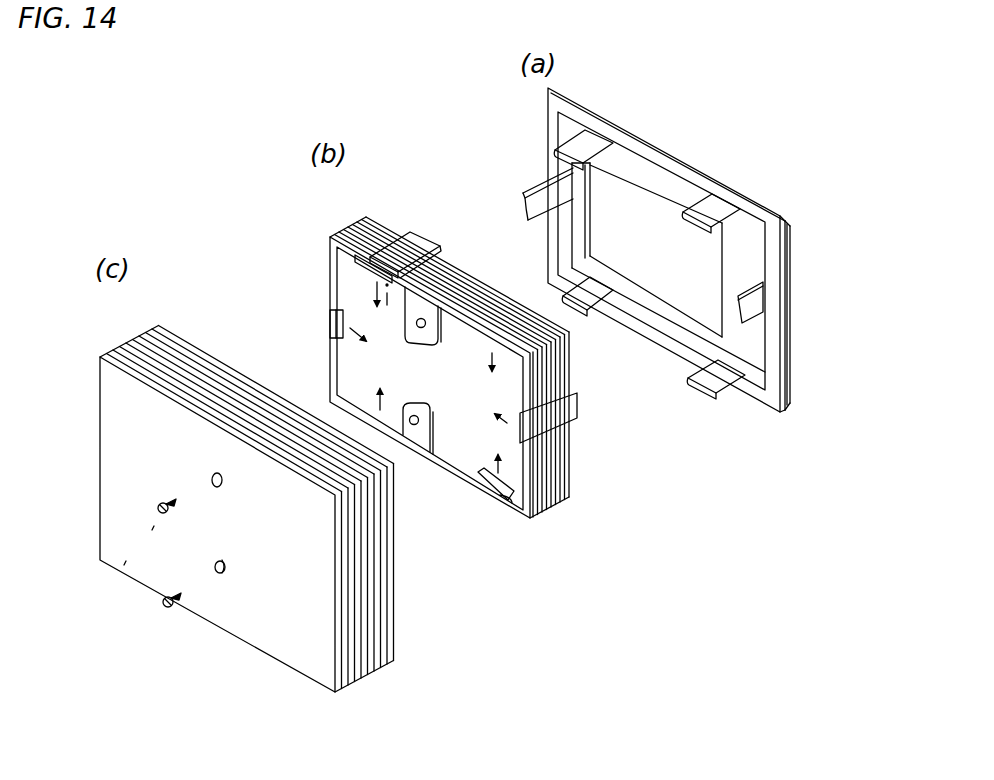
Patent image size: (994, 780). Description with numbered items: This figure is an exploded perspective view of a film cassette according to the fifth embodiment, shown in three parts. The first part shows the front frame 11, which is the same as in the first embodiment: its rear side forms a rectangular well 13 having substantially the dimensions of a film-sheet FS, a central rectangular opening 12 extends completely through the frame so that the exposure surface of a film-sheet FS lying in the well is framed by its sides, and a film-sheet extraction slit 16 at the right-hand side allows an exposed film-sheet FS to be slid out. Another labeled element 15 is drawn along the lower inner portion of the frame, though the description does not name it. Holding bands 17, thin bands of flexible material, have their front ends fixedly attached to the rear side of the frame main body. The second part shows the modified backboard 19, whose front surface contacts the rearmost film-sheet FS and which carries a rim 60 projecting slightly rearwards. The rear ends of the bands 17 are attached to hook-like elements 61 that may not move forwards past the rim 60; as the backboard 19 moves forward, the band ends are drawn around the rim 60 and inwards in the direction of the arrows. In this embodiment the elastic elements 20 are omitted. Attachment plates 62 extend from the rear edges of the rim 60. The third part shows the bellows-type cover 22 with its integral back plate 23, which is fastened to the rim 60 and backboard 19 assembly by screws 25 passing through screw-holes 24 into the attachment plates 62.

The front frame 11 is at (618, 127).
The opening 12 is at (588, 212).
The well 13 is at (799, 345).
The bottom wall of frame 15 is at (643, 318).
The film-sheet extraction slit 16 is at (788, 284).
The holding bands 17 is at (713, 207).
The film-sheets FS is at (383, 236).
The backboard 19 is at (348, 240).
The elastic elements 20 is at (328, 322).
The bellows-type cover 22 is at (100, 357).
The back plate 23 is at (113, 410).
The screw-holes 24 is at (211, 478).
The screws 25 is at (134, 566).
The rim 60 is at (532, 481).
The hook-like elements 61 is at (512, 505).
The attachment plates 62 is at (417, 433).